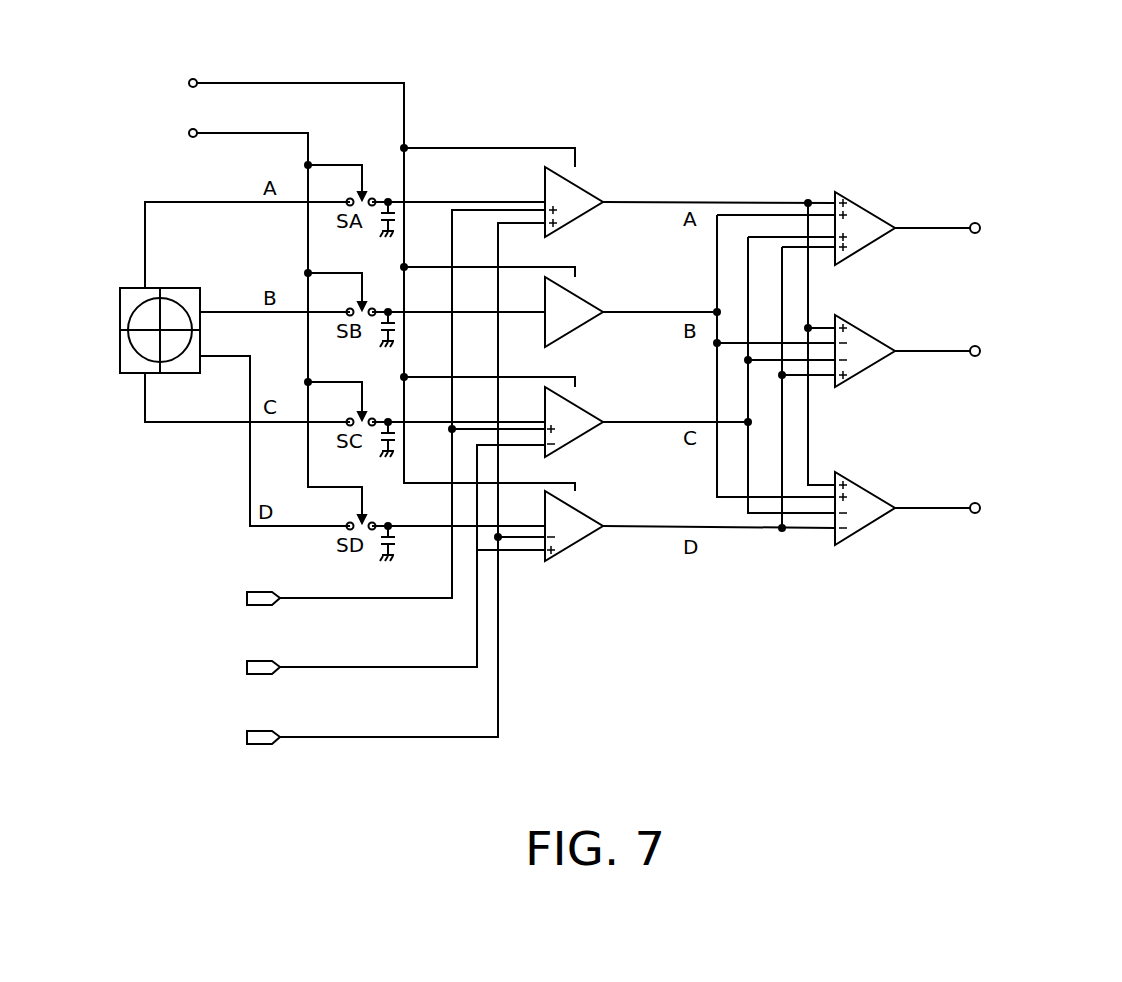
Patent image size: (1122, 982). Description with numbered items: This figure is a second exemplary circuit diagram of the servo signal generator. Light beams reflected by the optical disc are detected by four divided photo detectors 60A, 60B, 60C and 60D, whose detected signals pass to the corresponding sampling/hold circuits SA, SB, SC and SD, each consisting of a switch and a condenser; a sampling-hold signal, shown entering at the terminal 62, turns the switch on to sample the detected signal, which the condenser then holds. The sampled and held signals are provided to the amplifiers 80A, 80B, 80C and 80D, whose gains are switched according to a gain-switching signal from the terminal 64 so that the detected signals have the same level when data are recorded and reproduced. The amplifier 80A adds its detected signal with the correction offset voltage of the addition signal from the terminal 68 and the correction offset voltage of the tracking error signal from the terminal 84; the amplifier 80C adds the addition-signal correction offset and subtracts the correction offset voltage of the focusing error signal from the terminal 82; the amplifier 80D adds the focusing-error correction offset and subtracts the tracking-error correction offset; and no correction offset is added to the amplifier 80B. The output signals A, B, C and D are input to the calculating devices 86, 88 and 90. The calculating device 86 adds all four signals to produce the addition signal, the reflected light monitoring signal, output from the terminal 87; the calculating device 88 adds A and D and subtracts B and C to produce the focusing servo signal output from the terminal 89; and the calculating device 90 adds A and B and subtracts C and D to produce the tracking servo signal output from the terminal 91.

The terminal 64 is at (189, 80).
The sampling-hold signal terminal 62 is at (189, 130).
The photo detector 60A is at (128, 303).
The photo detector 60B is at (193, 297).
The photo detector 60C is at (188, 366).
The photo detector 60D is at (130, 370).
The terminal 68 is at (250, 590).
The terminal 82 is at (250, 664).
The terminal 84 is at (250, 734).
The amplifier 80A is at (587, 216).
The amplifier 80B is at (587, 326).
The amplifier 80C is at (587, 436).
The amplifier 80D is at (587, 540).
The calculating device 86 is at (864, 203).
The terminal 87 is at (973, 222).
The calculating device 88 is at (864, 327).
The terminal 89 is at (973, 345).
The calculating device 90 is at (864, 485).
The terminal 91 is at (973, 502).